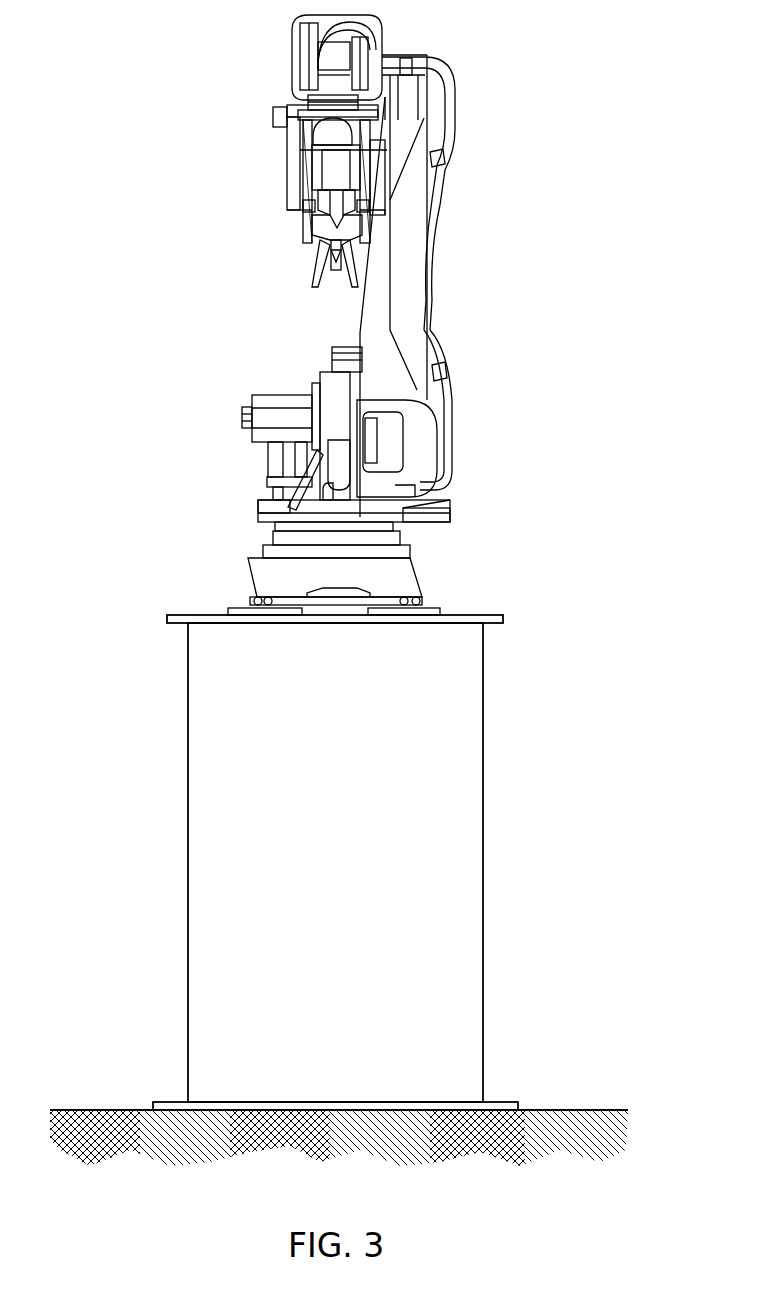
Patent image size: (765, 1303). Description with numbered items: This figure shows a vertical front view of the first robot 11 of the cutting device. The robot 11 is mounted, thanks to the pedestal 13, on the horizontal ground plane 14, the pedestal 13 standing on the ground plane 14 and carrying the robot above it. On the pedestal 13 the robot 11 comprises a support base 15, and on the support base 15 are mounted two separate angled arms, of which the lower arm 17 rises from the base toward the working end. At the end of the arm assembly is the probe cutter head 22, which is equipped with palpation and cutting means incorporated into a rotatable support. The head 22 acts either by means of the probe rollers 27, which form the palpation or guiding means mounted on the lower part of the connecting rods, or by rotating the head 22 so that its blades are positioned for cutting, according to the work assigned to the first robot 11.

The first robot 11 is at (295, 319).
The pedestal 13 is at (412, 805).
The ground plane 14 is at (548, 1110).
The support base 15 is at (410, 572).
The lower arm 17 is at (403, 273).
The probe cutter head 22 is at (245, 165).
The rollers 27 is at (316, 242).